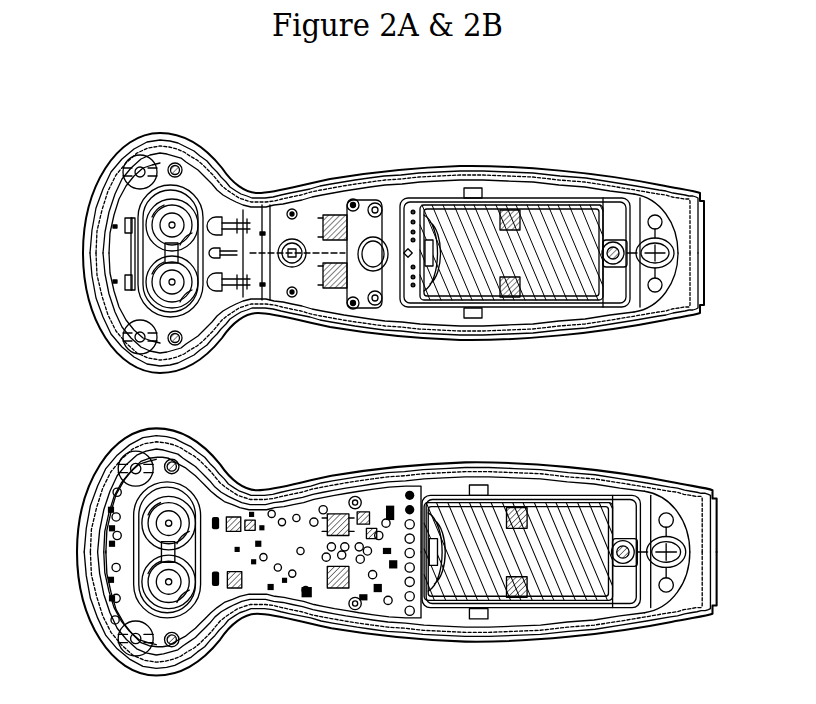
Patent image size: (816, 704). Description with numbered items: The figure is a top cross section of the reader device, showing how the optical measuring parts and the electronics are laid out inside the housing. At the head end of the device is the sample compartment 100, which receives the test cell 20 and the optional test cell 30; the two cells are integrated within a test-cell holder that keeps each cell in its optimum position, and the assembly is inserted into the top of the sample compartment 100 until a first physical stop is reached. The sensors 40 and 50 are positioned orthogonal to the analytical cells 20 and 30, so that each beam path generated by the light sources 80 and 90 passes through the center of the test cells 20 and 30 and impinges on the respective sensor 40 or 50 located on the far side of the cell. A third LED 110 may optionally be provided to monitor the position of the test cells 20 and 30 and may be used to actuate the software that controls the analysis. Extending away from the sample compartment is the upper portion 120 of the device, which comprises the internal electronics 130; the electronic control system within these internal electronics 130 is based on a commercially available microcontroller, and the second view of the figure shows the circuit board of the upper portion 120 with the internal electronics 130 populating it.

In FIG. 2A, the test cell 20 is at (173, 305).
In FIG. 2A, the optional test cell 30 is at (190, 208).
In FIG. 2A, the sensor 40 is at (123, 292).
In FIG. 2A, the sensor 50 is at (123, 217).
In FIG. 2A, the light source 80 is at (222, 284).
In FIG. 2A, the light source 90 is at (218, 224).
In FIG. 2A, the sample compartment 100 is at (180, 202).
In FIG. 2A, the third LED 110 is at (222, 252).
In FIG. 2B, the upper portion 120 is at (263, 539).
In FIG. 2B, the internal electronics 130 is at (318, 483).